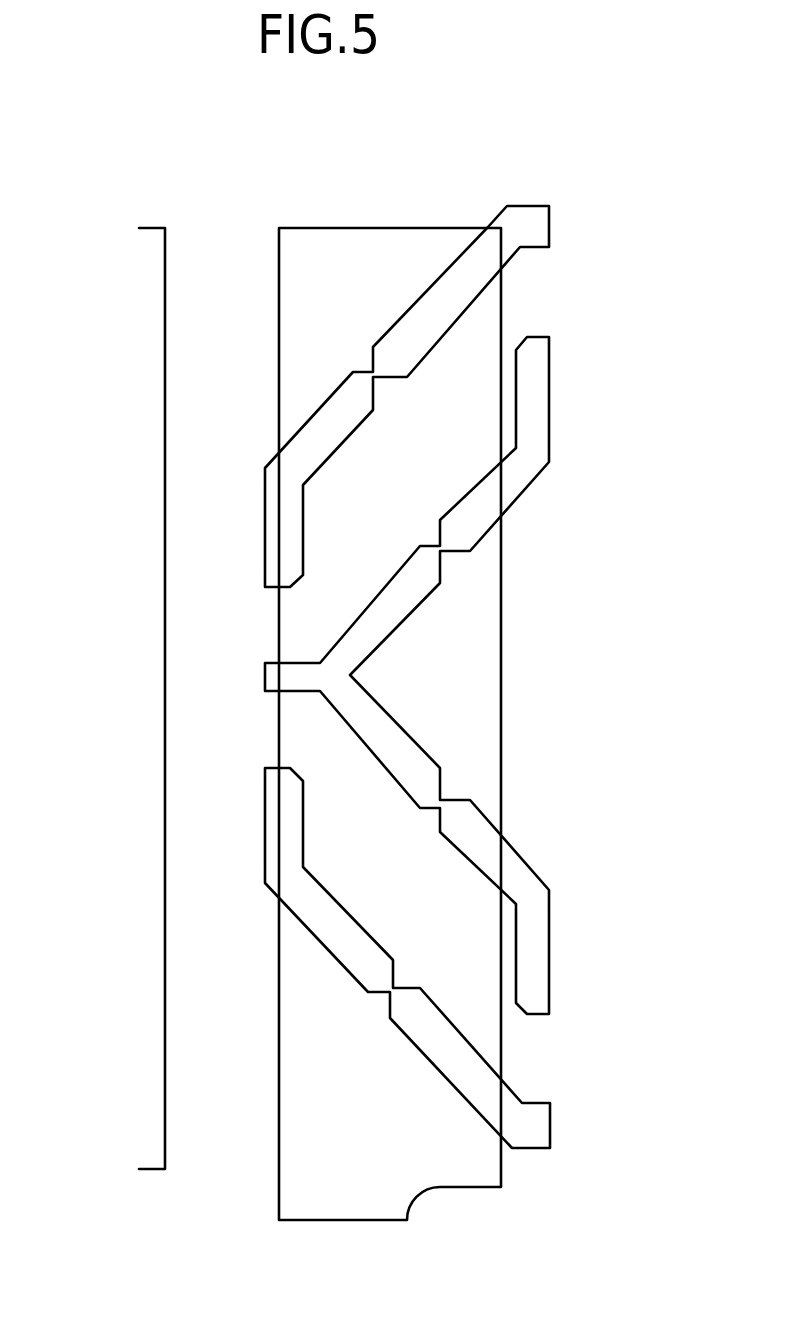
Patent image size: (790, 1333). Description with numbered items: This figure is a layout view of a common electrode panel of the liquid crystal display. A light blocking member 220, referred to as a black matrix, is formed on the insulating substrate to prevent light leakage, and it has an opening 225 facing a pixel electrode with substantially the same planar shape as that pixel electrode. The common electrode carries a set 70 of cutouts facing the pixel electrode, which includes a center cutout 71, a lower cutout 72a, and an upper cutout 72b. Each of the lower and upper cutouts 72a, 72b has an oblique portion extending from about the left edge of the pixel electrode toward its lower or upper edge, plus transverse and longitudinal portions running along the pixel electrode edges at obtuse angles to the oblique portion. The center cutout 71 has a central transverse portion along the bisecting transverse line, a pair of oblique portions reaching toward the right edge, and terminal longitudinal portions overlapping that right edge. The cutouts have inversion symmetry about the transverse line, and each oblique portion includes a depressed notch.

The light blocking member 220 is at (278, 272).
The opening 225 is at (501, 720).
The set of cutouts 70 is at (477, 677).
The center cutout 71 is at (477, 551).
The lower cutout 72a is at (370, 412).
The upper cutout 72b is at (358, 983).